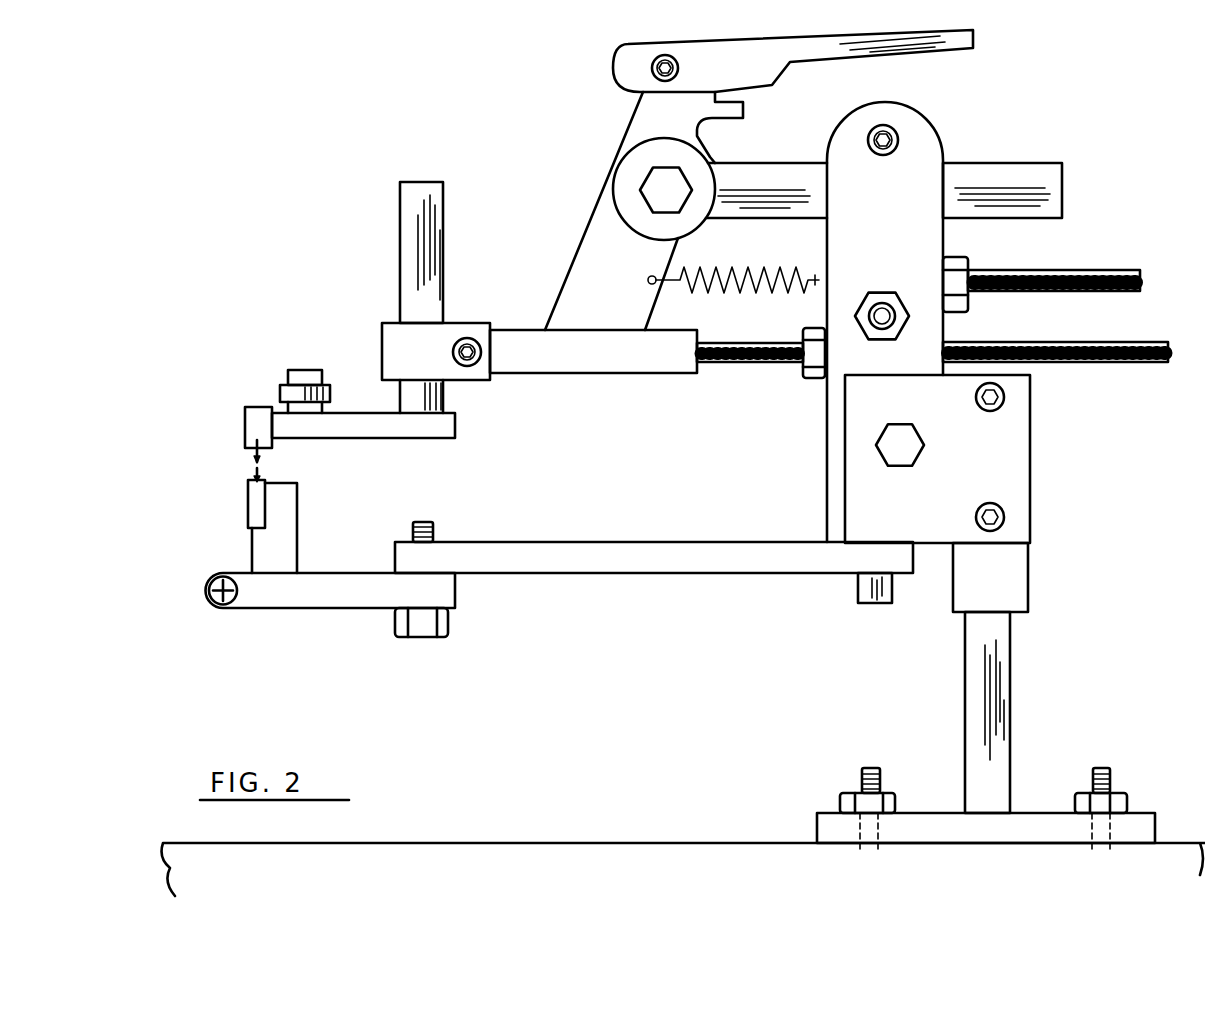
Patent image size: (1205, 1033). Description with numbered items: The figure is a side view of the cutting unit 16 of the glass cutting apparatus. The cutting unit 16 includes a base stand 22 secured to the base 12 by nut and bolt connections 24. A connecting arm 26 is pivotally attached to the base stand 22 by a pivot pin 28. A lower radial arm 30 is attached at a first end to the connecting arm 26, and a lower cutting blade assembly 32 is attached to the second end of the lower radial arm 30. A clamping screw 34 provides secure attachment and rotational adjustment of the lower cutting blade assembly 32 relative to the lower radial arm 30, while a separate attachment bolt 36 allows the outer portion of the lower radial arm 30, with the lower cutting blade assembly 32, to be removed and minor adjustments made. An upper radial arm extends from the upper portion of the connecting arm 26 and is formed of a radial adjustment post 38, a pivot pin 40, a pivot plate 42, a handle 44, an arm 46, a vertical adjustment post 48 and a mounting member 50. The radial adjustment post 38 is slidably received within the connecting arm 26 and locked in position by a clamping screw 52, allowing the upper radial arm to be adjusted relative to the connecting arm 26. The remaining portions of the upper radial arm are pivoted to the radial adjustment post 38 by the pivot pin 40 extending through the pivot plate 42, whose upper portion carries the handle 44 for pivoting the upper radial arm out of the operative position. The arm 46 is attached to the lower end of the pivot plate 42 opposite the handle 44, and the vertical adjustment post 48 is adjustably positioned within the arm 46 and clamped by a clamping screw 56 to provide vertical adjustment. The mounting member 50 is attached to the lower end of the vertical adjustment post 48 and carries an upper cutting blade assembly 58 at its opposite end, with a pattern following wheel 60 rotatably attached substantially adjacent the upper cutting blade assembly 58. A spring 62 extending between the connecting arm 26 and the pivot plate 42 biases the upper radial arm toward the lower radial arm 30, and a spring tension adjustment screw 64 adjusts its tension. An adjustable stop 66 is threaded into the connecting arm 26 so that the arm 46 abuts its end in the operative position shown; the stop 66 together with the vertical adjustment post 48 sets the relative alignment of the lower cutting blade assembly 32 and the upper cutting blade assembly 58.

The base 12 is at (585, 843).
The cutting unit 16 is at (510, 102).
The base stand 22 is at (1005, 584).
The nut and bolt connections 24 is at (858, 788).
The connecting arm 26 is at (904, 248).
The pivot pin 28 is at (885, 447).
The lower radial arm 30 is at (640, 552).
The lower cutting blade assembly 32 is at (253, 508).
The clamping screw 34 is at (212, 600).
The attachment bolt 36 is at (450, 618).
The radial adjustment post 38 is at (783, 178).
The pivot pin 40 is at (645, 190).
The pivot plate 42 is at (600, 238).
The handle 44 is at (811, 37).
The arm 46 is at (572, 355).
The vertical adjustment post 48 is at (420, 231).
The mounting member 50 is at (418, 428).
The clamping screw 52 is at (897, 138).
The clamping screw 56 is at (472, 365).
The upper cutting blade assembly 58 is at (248, 434).
The pattern following wheel 60 is at (328, 392).
The spring 62 is at (790, 272).
The spring tension adjustment screw 64 is at (1100, 270).
The adjustable stop 66 is at (763, 362).